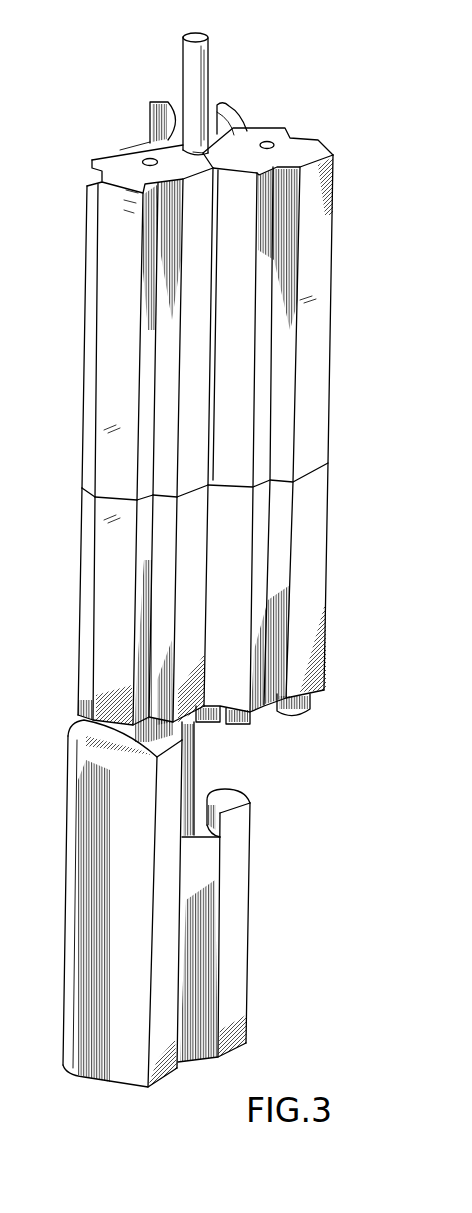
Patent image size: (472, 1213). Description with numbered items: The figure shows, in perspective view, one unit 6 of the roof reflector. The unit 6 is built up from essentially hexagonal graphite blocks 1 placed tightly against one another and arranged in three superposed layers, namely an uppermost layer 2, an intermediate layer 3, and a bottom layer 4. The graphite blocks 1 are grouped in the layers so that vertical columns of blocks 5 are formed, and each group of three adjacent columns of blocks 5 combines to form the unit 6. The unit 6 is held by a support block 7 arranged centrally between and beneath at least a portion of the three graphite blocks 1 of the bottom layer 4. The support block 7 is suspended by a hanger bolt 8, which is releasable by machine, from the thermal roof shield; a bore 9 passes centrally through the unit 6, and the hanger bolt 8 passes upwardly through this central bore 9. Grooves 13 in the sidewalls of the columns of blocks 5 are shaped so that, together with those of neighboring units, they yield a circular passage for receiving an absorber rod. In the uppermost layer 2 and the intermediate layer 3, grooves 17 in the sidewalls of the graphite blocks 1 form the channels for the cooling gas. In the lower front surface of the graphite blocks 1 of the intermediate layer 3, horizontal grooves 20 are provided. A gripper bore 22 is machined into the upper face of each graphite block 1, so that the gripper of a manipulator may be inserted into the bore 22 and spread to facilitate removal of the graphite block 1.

The graphite block 1 is at (313, 277).
The uppermost layer 2 is at (192, 343).
The intermediate layer 3 is at (187, 577).
The bottom layer 4 is at (172, 768).
The columns of blocks 5 is at (174, 122).
The unit 6 is at (297, 113).
The support block 7 is at (198, 908).
The hanger bolt 8 is at (203, 62).
The bore 9 is at (233, 135).
The groove 13 is at (150, 120).
The groove 17 is at (287, 327).
The horizontal groove 20 is at (307, 703).
The gripper bore 22 is at (140, 165).